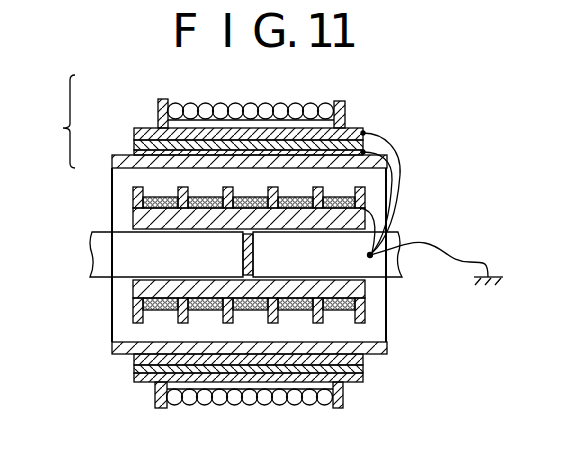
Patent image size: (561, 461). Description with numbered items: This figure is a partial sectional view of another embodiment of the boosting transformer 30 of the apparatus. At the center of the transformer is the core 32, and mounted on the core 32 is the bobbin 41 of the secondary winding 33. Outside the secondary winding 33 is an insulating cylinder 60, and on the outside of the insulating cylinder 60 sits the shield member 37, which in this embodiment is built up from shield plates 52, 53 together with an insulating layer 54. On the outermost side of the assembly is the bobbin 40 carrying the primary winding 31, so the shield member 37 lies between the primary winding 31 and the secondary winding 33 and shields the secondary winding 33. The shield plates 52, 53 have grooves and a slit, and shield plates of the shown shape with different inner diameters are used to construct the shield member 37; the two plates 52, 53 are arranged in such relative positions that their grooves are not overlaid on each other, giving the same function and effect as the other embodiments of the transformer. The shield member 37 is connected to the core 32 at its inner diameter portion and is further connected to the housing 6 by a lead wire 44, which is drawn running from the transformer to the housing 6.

The housing 6 is at (500, 268).
The boosting transformer 30 is at (417, 143).
The primary winding 31 is at (297, 103).
The core 32 is at (101, 253).
The secondary winding 33 is at (143, 195).
The shield member 37 is at (52, 121).
The bobbin of the primary winding 40 is at (340, 116).
The bobbin of the secondary winding 41 is at (138, 214).
The lead wire 44 is at (444, 253).
The shield plate 52 is at (137, 127).
The shield plate 53 is at (134, 154).
The insulating layer 54 is at (134, 142).
The insulating cylinder 60 is at (390, 348).